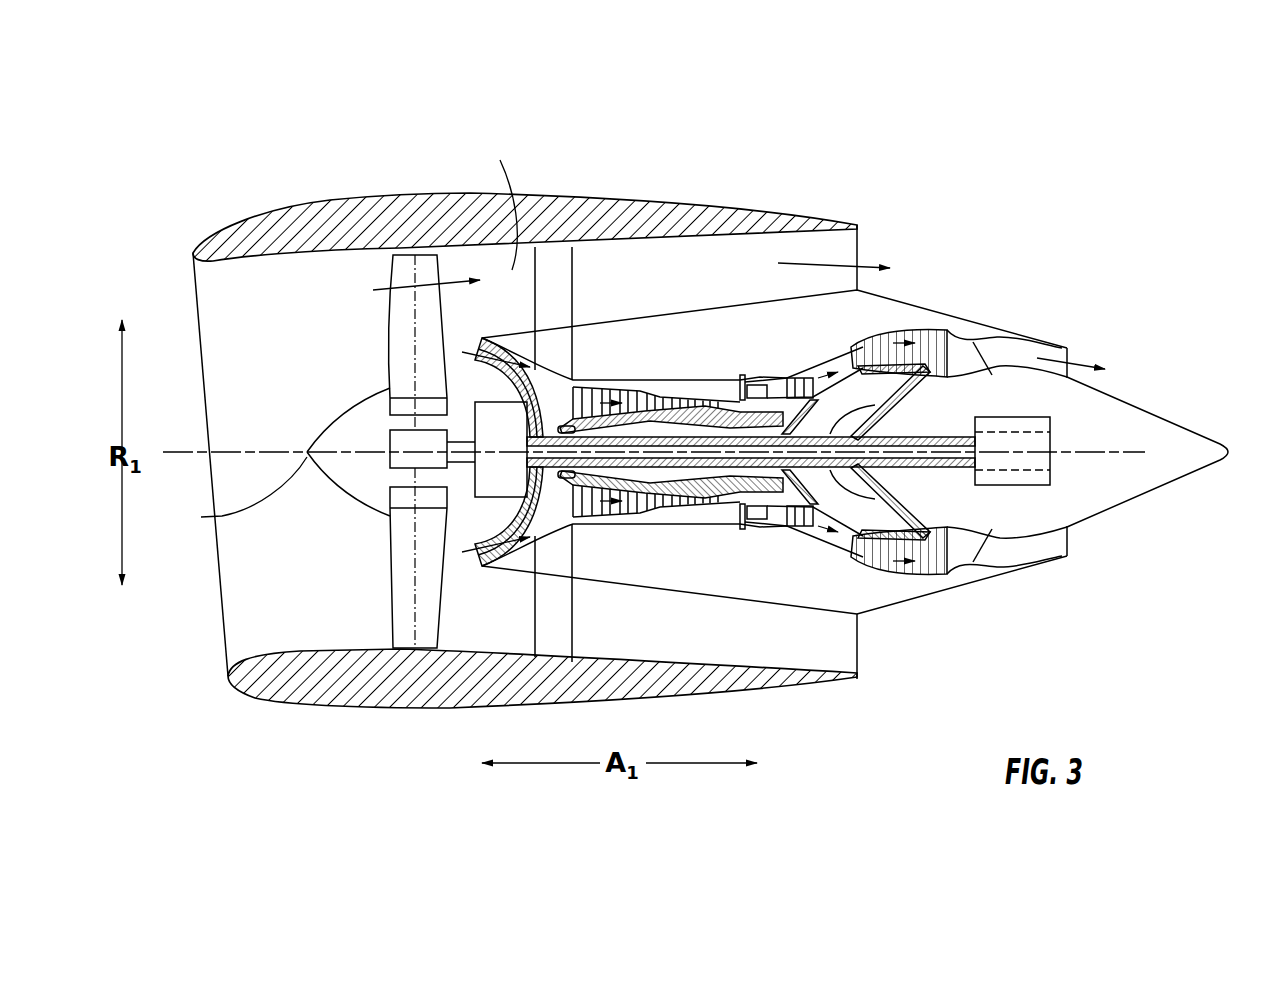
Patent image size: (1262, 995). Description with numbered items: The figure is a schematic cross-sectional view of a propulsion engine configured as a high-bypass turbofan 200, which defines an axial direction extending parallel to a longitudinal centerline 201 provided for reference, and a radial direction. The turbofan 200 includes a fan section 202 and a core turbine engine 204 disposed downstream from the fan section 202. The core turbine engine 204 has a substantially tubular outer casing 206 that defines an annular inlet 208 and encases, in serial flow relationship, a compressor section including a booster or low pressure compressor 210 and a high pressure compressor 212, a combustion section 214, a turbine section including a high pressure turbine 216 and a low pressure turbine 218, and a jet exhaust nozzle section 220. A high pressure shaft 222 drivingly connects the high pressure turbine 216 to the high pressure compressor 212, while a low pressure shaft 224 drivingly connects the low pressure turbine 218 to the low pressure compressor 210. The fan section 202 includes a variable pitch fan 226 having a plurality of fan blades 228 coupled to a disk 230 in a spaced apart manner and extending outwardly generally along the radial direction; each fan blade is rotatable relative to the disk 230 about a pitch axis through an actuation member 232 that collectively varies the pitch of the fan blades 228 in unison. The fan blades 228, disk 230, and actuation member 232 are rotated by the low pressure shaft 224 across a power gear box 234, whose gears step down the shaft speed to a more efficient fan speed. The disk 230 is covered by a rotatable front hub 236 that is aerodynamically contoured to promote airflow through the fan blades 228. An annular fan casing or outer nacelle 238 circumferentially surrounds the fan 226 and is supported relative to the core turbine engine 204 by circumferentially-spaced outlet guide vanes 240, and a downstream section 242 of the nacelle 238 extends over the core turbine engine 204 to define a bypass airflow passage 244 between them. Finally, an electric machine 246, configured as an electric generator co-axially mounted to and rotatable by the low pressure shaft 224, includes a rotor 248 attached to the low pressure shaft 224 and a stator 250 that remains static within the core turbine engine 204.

The turbofan 200 is at (990, 210).
The longitudinal centerline 201 is at (1147, 452).
The fan section 202 is at (352, 277).
The core turbine engine 204 is at (684, 337).
The outer casing 206 is at (725, 597).
The annular inlet 208 is at (480, 556).
The low pressure compressor 210 is at (517, 560).
The high pressure compressor 212 is at (598, 506).
The combustion section 214 is at (760, 515).
The high pressure turbine 216 is at (880, 512).
The low pressure turbine 218 is at (933, 572).
The jet exhaust nozzle section 220 is at (987, 550).
The high pressure shaft 222 is at (758, 380).
The low pressure shaft 224 is at (893, 412).
The variable pitch fan 226 is at (360, 499).
The fan blades 228 is at (390, 593).
The disk 230 is at (410, 407).
The actuation member 232 is at (390, 431).
The power gear box 234 is at (498, 423).
The front hub 236 is at (232, 494).
The outer nacelle 238 is at (437, 708).
The outlet guide vanes 240 is at (572, 270).
The downstream section 242 is at (785, 217).
The bypass airflow passage 244 is at (801, 265).
The electric machine 246 is at (1087, 430).
The rotor 248 is at (1047, 462).
The stator 250 is at (993, 487).